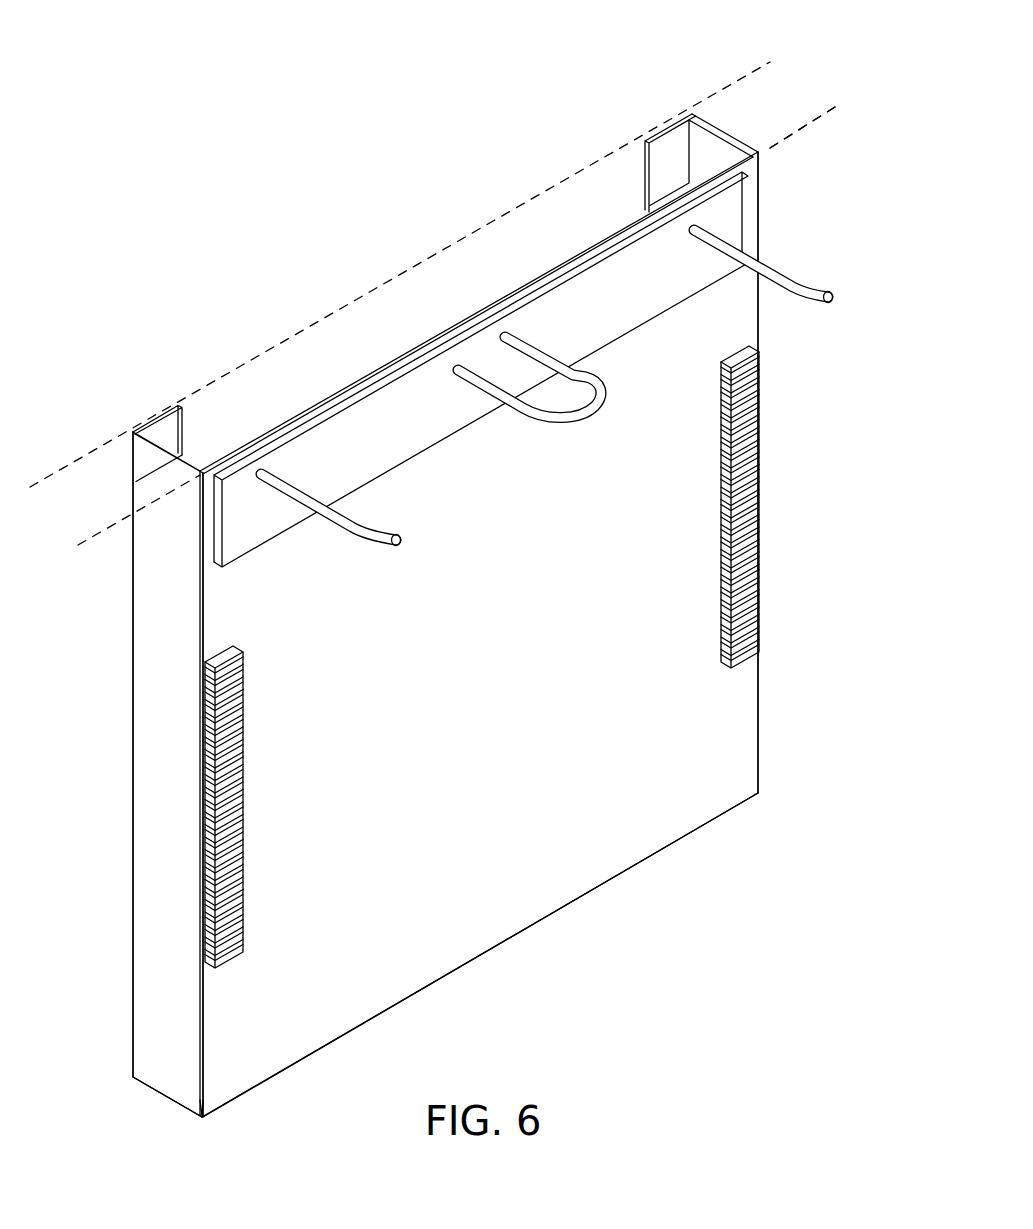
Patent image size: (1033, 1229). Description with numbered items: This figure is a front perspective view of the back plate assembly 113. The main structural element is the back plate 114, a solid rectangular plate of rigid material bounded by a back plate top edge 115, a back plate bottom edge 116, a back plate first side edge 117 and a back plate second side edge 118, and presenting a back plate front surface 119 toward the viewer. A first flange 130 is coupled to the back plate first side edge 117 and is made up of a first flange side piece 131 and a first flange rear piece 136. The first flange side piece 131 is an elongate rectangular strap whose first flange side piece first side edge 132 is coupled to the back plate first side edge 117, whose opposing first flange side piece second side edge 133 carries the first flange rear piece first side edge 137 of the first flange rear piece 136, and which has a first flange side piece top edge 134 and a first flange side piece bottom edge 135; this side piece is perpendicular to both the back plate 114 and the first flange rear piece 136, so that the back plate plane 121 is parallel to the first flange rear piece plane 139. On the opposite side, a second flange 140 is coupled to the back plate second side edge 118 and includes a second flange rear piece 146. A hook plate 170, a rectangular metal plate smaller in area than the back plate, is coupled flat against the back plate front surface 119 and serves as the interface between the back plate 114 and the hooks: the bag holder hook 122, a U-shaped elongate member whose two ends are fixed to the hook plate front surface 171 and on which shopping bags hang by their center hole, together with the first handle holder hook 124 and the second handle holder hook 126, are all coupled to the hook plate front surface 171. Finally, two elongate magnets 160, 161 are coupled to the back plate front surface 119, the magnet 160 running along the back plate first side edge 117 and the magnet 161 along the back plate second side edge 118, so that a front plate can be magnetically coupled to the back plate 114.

The back plate assembly 113 is at (464, 623).
The back plate 114 is at (735, 707).
The back plate top edge 115 is at (325, 395).
The back plate bottom edge 116 is at (640, 866).
The back plate first side edge 117 is at (220, 1058).
The back plate second side edge 118 is at (760, 748).
The back plate front surface 119 is at (503, 690).
The back plate plane 121 is at (803, 128).
The bag holder hook 122 is at (560, 420).
The first handle holder hook 124 is at (401, 548).
The second handle holder hook 126 is at (836, 293).
The first flange 130 is at (130, 747).
The first flange side piece 131 is at (155, 797).
The first flange side piece first side edge 132 is at (189, 1104).
The first flange side piece second side edge 133 is at (141, 739).
The first flange side piece top edge 134 is at (190, 448).
The first flange side piece bottom edge 135 is at (152, 1088).
The first flange rear piece 136 is at (179, 408).
The first flange rear piece first side edge 137 is at (131, 413).
The first flange rear piece plane 139 is at (728, 82).
The second flange 140 is at (725, 431).
The second flange rear piece 146 is at (672, 150).
The magnet 160 is at (205, 870).
The magnet 161 is at (760, 460).
The hook plate 170 is at (481, 366).
The hook plate front surface 171 is at (586, 309).